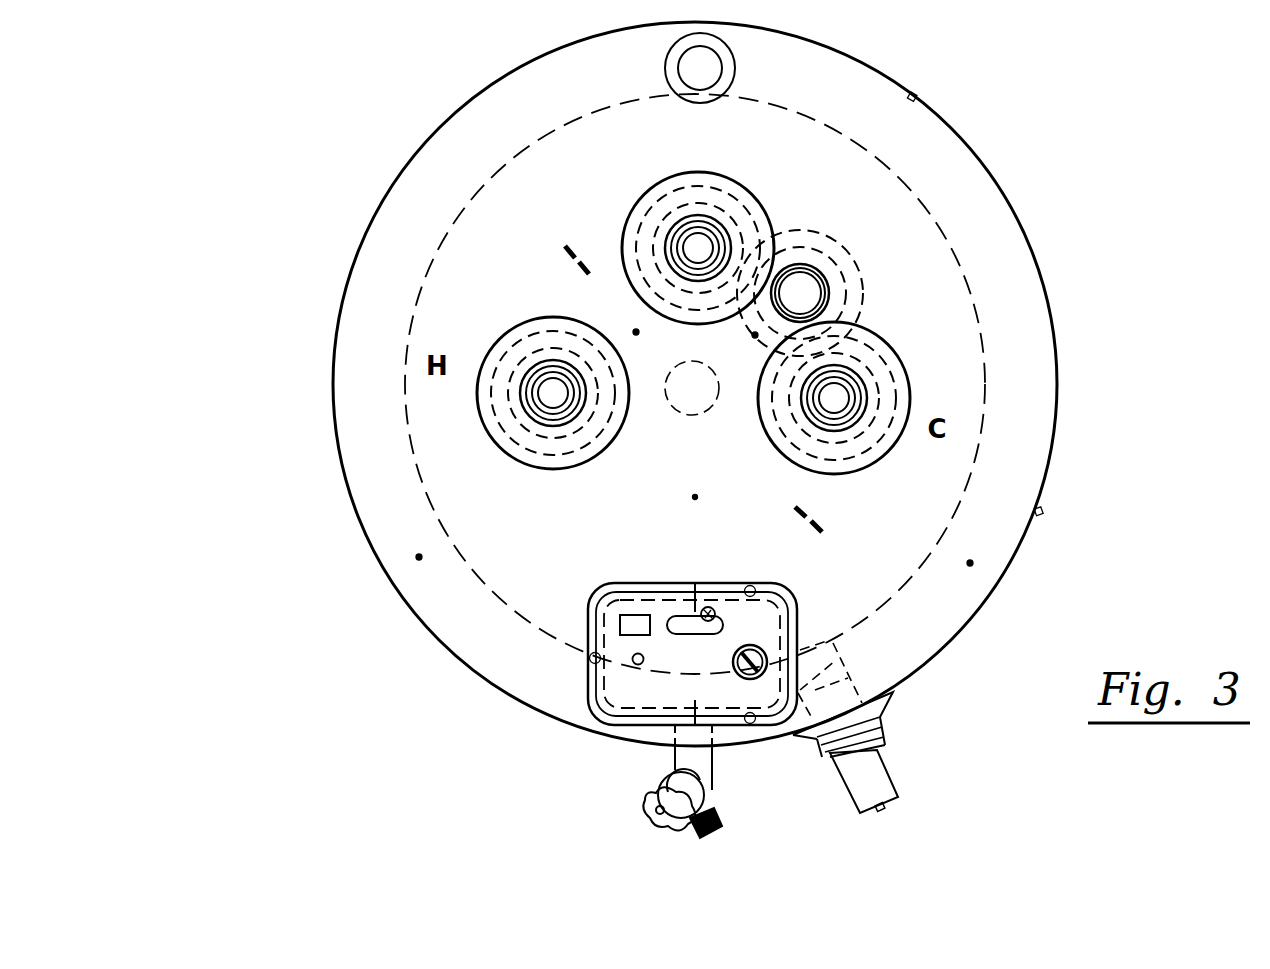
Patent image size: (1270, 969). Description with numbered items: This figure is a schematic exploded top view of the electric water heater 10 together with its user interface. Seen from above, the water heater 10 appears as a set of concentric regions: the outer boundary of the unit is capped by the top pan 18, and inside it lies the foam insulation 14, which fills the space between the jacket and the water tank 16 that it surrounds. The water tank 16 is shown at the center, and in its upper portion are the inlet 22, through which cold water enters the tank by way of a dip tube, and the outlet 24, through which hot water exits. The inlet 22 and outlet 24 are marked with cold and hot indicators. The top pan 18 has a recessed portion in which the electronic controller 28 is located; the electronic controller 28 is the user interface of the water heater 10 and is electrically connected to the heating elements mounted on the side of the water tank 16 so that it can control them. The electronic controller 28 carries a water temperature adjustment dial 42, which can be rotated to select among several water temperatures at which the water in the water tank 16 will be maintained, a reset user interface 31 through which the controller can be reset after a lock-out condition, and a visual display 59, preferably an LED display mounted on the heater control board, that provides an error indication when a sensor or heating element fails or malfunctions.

The electric water heater 10 is at (305, 520).
The foam insulation 14 is at (380, 392).
The water tank 16 is at (463, 210).
The top pan 18 is at (445, 123).
The inlet 22 is at (852, 392).
The outlet 24 is at (540, 380).
The electronic controller 28 is at (598, 692).
The reset user interface 31 is at (623, 620).
The water temperature adjustment dial 42 is at (752, 680).
The visual display 59 is at (637, 670).